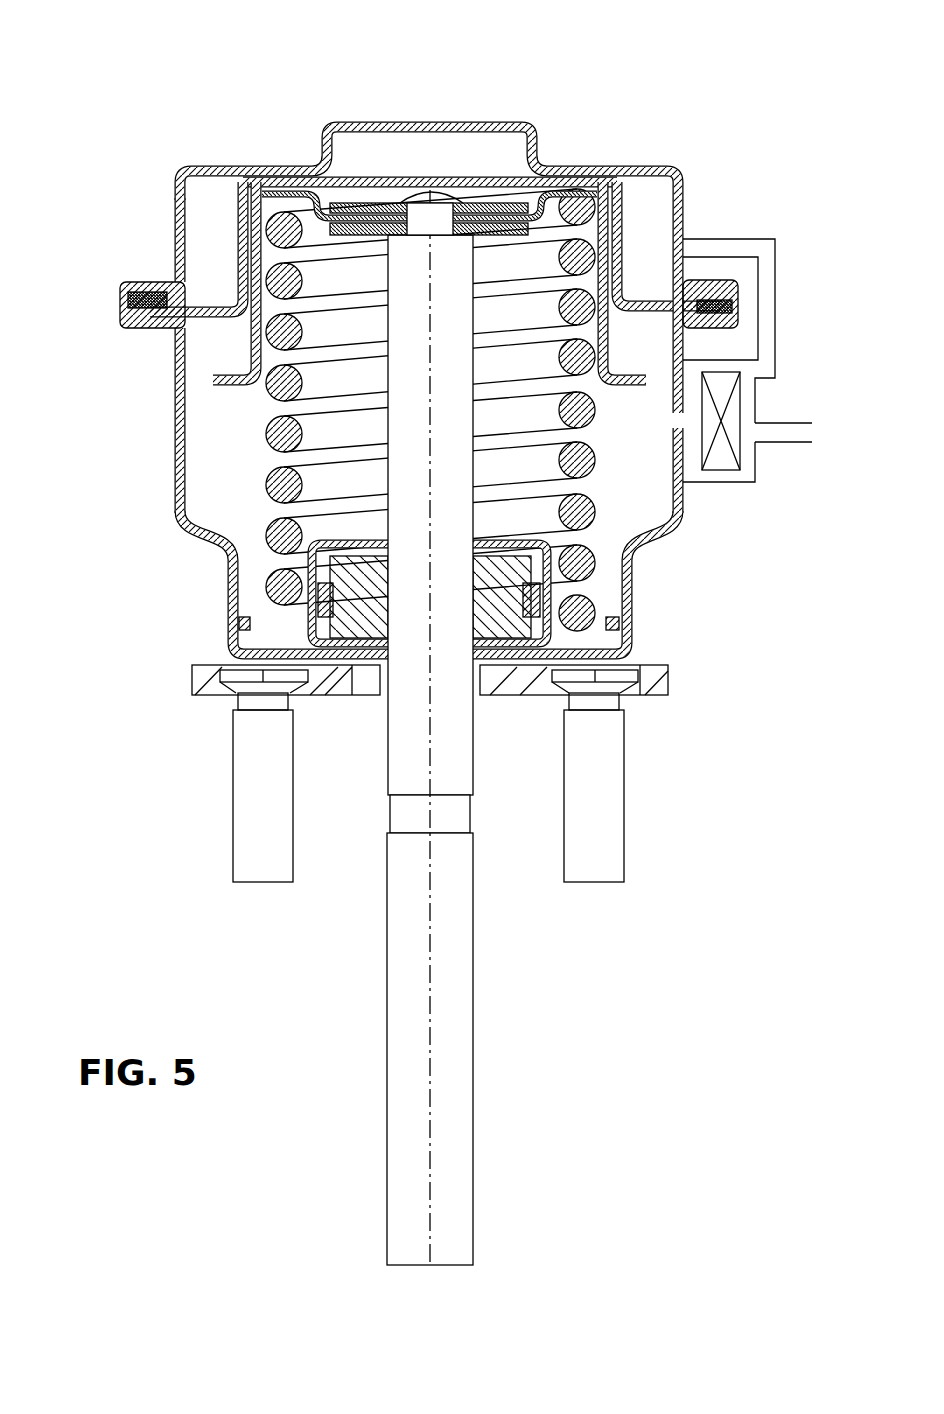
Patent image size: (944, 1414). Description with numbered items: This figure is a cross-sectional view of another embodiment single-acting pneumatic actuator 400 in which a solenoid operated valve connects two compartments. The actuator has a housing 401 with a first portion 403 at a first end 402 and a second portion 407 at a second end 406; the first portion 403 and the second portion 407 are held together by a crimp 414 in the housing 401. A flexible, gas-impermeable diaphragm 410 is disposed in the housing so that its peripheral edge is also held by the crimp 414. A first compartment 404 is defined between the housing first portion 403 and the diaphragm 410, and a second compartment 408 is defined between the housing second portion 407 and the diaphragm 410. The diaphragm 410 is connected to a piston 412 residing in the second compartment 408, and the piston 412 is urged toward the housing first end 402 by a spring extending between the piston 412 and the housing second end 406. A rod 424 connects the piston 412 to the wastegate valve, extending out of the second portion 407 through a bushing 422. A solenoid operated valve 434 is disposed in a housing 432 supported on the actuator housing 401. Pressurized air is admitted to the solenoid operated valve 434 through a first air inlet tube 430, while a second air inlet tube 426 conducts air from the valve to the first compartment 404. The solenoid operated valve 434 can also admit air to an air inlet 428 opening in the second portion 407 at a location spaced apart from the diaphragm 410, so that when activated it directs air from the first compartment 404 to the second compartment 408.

The single-acting pneumatic actuator 400 is at (721, 86).
The housing 401 is at (103, 182).
The first end 402 is at (226, 165).
The first portion 403 is at (178, 250).
The first compartment 404 is at (641, 197).
The second end 406 is at (225, 660).
The second portion 407 is at (175, 358).
The second compartment 408 is at (215, 495).
The diaphragm 410 is at (365, 165).
The piston 412 is at (480, 200).
The crimp 414 is at (720, 305).
The bushing 422 is at (500, 605).
The rod 424 is at (450, 958).
The second air inlet tube 426 is at (735, 238).
The air inlet 428 is at (681, 430).
The first air inlet tube 430 is at (787, 423).
The housing 432 is at (757, 398).
The solenoid operated valve 434 is at (740, 452).